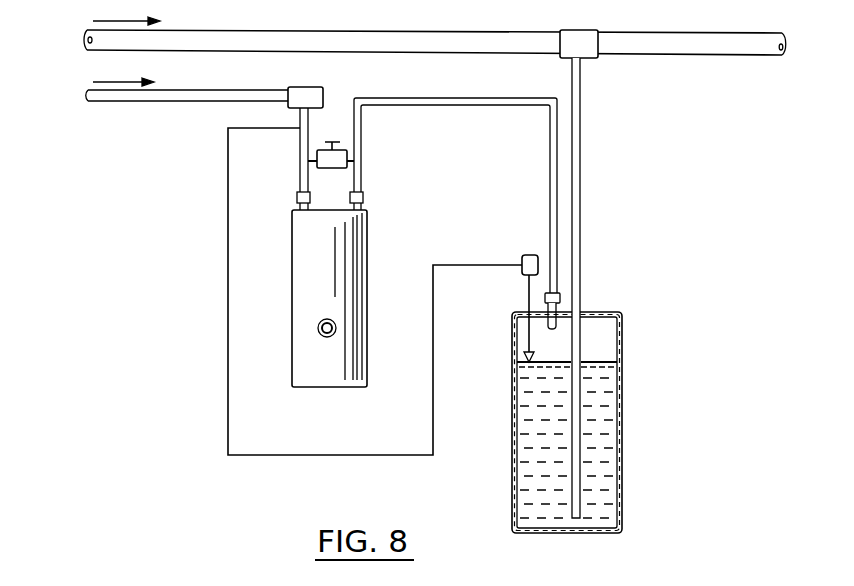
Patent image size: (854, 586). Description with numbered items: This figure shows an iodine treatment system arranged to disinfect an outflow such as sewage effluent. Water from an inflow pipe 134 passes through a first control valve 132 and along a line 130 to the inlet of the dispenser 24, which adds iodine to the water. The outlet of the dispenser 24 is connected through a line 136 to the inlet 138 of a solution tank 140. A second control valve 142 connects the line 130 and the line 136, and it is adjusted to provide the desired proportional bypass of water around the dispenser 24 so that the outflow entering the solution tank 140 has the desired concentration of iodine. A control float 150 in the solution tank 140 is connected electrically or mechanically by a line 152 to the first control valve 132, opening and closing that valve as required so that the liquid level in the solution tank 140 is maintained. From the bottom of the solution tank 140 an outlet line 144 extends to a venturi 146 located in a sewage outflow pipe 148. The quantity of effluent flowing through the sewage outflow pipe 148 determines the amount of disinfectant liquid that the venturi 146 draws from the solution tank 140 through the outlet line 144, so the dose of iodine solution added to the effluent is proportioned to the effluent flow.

The dispenser 24 is at (305, 284).
The line 130 is at (301, 178).
The first control valve 132 is at (308, 87).
The inflow pipe 134 is at (187, 97).
The line 136 is at (497, 107).
The inlet 138 is at (560, 294).
The solution tank 140 is at (622, 416).
The second control valve 142 is at (338, 125).
The outlet line 144 is at (577, 192).
The venturi 146 is at (574, 30).
The sewage outflow pipe 148 is at (737, 47).
The control float 150 is at (530, 255).
The line 152 is at (467, 265).